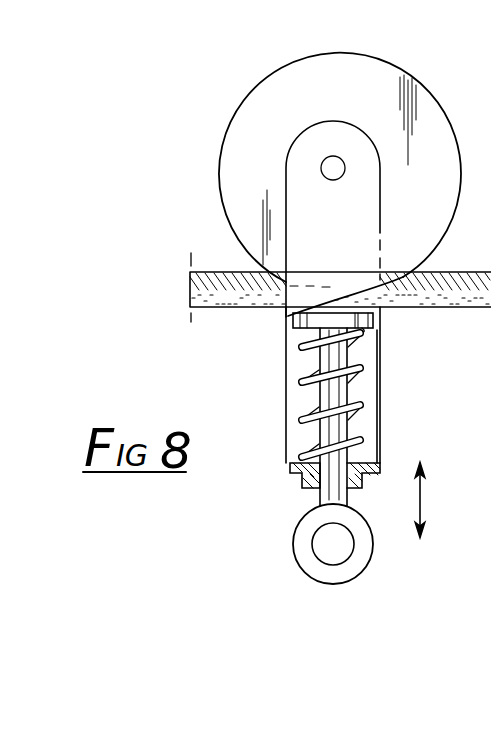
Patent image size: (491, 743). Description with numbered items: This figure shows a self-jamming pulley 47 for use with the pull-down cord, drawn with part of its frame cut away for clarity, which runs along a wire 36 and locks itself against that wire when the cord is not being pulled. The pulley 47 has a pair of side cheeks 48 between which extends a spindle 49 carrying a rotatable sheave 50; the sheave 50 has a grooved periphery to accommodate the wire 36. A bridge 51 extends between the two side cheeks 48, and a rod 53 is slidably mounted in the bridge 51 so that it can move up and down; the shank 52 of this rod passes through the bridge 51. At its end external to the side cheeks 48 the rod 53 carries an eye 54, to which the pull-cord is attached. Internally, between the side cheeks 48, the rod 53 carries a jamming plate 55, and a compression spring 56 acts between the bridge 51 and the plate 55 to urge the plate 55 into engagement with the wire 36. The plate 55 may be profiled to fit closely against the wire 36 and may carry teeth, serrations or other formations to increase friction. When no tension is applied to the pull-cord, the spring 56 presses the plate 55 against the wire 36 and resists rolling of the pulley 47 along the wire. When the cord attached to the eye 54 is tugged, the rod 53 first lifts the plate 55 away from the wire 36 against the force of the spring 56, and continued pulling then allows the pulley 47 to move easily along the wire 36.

The wire 36 is at (190, 285).
The pulley 47 is at (194, 222).
The side cheeks 48 is at (307, 213).
The spindle 49 is at (320, 170).
The sheave 50 is at (235, 118).
The bridge 51 is at (297, 475).
The rod 52 is at (305, 492).
The rod 53 is at (312, 366).
The eye 54 is at (312, 567).
The jamming plate 55 is at (373, 322).
The compression spring 56 is at (300, 413).